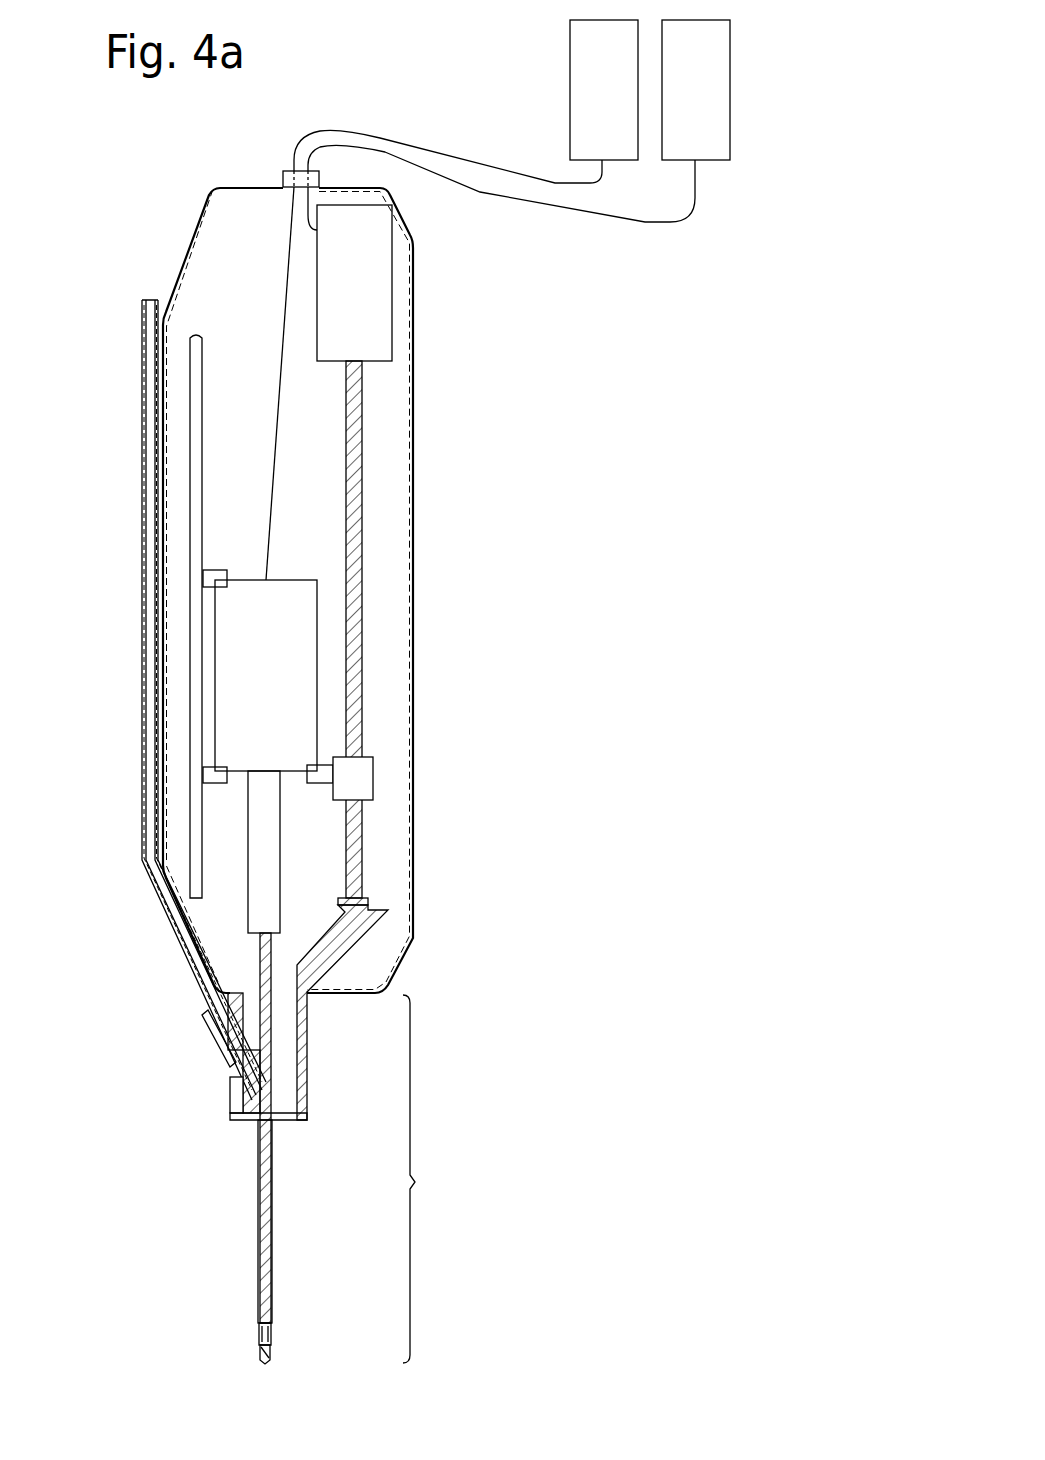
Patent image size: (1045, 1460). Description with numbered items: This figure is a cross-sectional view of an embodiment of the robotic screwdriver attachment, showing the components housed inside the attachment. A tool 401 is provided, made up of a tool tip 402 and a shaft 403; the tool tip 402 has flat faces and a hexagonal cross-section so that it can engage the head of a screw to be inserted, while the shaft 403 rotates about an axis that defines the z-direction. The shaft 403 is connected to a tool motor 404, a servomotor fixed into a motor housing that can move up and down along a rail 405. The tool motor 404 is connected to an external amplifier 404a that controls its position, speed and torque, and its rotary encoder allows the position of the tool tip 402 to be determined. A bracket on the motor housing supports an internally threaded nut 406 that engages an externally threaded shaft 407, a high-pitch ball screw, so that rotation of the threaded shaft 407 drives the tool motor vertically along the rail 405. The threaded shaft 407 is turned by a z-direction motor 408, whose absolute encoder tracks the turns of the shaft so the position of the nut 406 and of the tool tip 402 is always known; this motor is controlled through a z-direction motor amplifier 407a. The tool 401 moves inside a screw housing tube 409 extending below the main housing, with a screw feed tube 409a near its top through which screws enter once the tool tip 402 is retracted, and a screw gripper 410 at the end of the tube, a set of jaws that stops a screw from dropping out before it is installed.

The tool 401 is at (433, 1179).
The tool tip 402 is at (268, 1328).
The shaft 403 is at (265, 1265).
The tool motor 404 is at (225, 622).
The external amplifier 404a is at (582, 52).
The rail 405 is at (190, 415).
The internally threaded nut 406 is at (362, 780).
The externally threaded shaft 407 is at (363, 458).
The z-direction motor amplifier 407a is at (713, 60).
The z-direction motor 408 is at (372, 268).
The screw housing tube 409 is at (258, 1218).
The screw feed tube 409a is at (175, 955).
The screw gripper 410 is at (262, 1352).